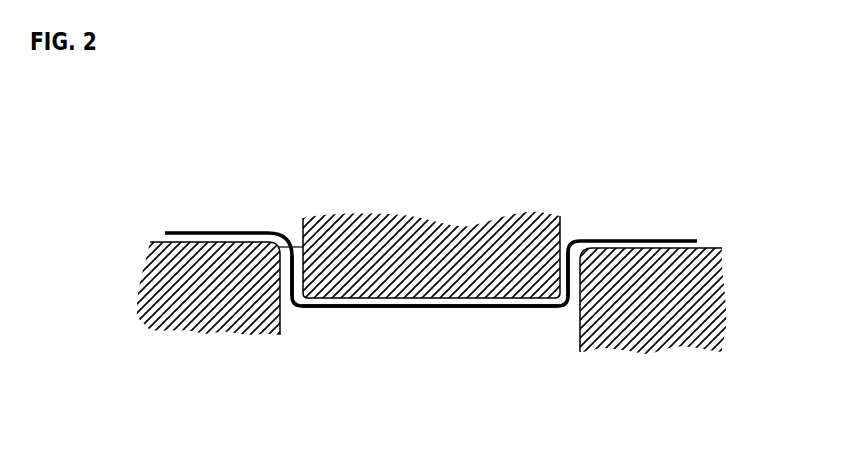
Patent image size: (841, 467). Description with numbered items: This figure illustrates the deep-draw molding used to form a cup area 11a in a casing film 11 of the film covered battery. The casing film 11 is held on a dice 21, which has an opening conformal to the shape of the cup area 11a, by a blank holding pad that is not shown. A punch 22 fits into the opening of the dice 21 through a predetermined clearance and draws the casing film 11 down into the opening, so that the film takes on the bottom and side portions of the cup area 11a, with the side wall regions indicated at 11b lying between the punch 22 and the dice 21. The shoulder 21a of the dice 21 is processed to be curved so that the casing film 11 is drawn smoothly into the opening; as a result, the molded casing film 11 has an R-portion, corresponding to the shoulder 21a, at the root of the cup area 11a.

The casing film 11 is at (205, 232).
The cup area 11a is at (407, 310).
The side portion of film 11b is at (323, 240).
The dice 21 is at (213, 317).
The shoulder 21a is at (275, 242).
The punch 22 is at (440, 245).